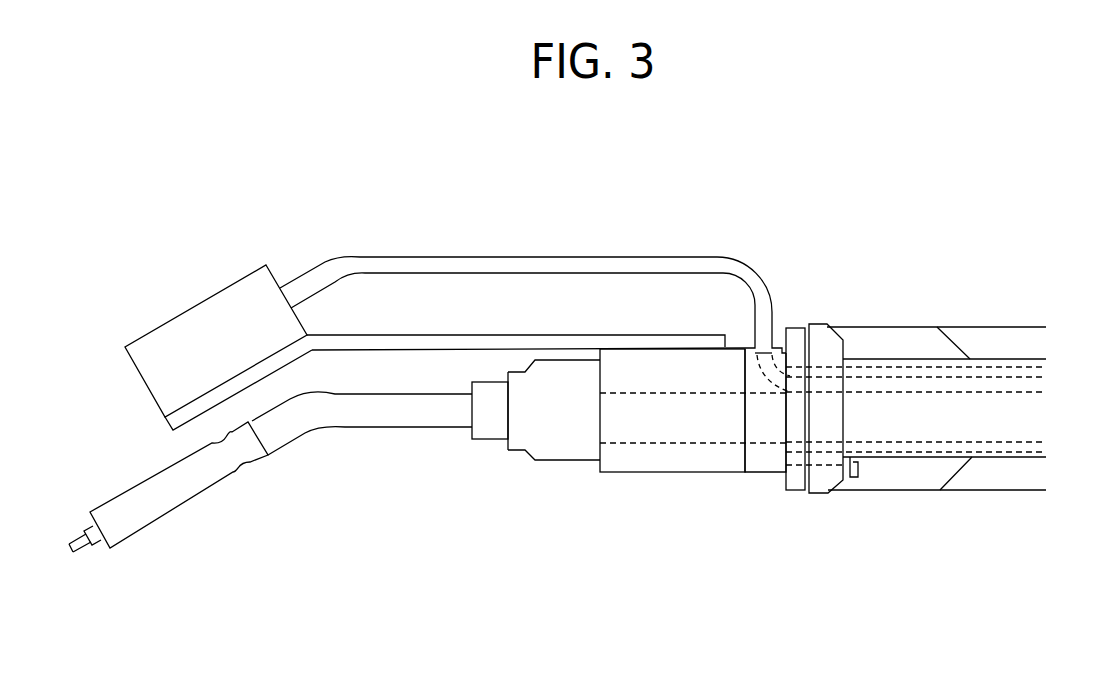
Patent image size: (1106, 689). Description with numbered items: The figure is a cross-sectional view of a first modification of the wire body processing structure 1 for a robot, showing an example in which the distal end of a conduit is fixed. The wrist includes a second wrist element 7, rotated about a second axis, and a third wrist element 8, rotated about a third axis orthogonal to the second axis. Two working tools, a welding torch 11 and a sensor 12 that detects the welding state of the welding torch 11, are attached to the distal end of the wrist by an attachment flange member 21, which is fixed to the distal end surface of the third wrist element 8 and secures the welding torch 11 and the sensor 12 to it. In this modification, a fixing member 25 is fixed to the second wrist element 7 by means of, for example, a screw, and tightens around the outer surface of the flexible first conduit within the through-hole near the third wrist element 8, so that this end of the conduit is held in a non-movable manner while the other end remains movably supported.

The wire body processing structure 1 is at (808, 528).
The second wrist element 7 is at (884, 327).
The third wrist element 8 is at (797, 328).
The welding torch 11 is at (562, 459).
The sensor 12 is at (217, 293).
The attachment flange member 21 is at (763, 474).
The fixing member 25 is at (797, 415).